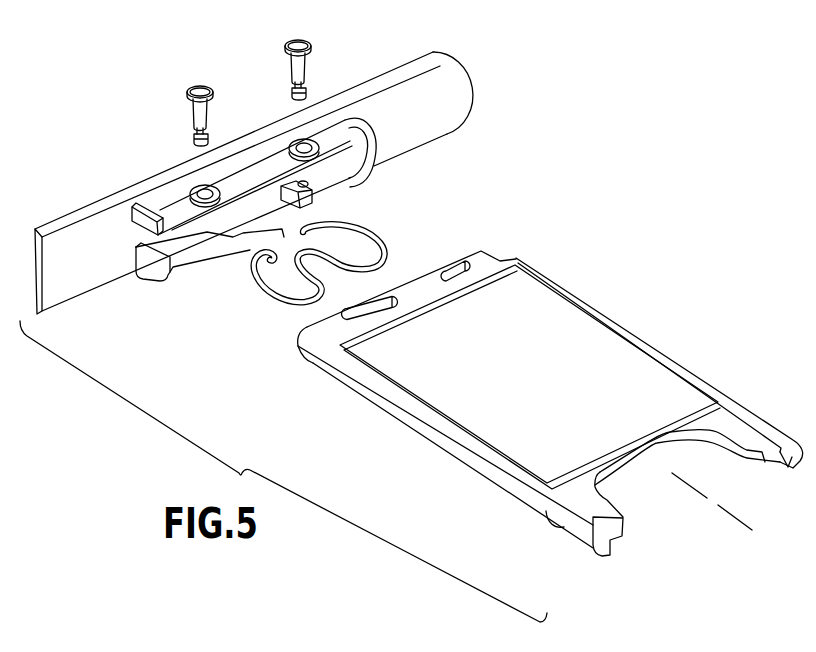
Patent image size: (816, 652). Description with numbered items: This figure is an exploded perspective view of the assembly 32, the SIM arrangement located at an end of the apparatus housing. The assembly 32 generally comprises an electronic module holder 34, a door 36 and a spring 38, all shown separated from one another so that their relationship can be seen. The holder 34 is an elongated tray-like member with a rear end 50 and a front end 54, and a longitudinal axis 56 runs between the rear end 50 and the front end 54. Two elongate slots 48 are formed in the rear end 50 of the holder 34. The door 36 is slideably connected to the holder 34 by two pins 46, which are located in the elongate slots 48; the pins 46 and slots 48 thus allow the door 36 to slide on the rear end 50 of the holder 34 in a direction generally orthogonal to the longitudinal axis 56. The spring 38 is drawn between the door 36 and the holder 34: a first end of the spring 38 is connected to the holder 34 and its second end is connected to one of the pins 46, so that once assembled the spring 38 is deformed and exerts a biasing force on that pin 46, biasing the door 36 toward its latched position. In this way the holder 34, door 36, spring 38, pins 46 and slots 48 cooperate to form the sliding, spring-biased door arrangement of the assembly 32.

The assembly 32 is at (548, 204).
The electronic module holder 34 is at (523, 394).
The door 36 is at (445, 51).
The spring 38 is at (364, 235).
The pins 46 is at (286, 52).
The elongate slots 48 is at (384, 293).
The rear end 50 is at (297, 340).
The front end 54 is at (620, 541).
The longitudinal axis 56 is at (710, 500).